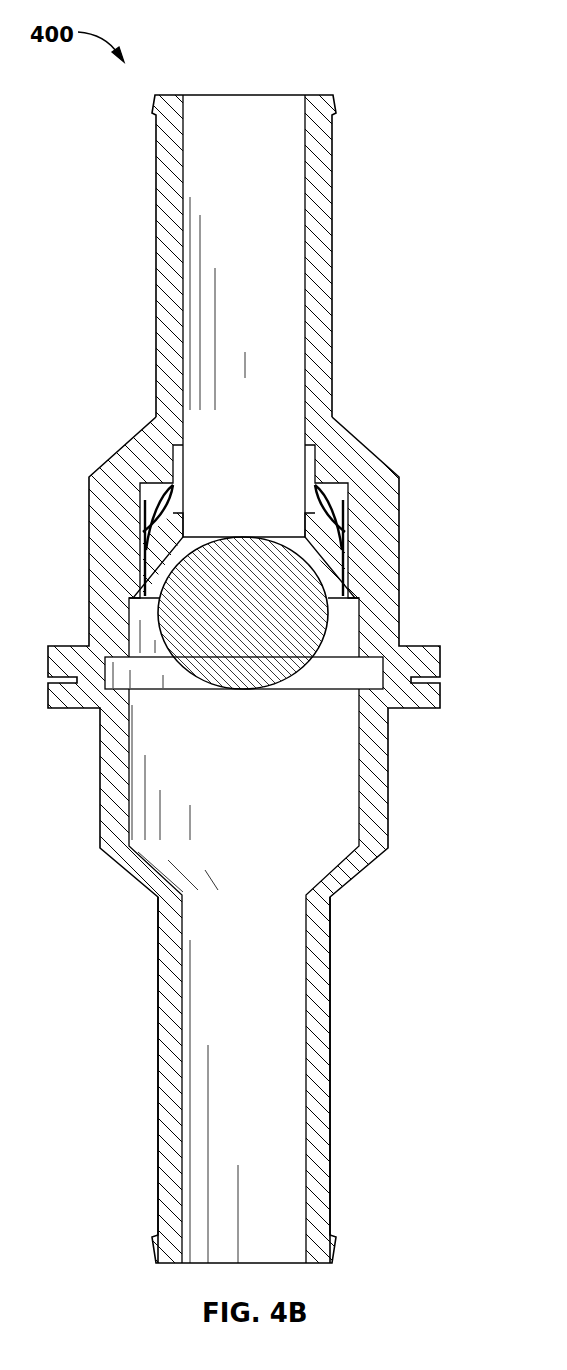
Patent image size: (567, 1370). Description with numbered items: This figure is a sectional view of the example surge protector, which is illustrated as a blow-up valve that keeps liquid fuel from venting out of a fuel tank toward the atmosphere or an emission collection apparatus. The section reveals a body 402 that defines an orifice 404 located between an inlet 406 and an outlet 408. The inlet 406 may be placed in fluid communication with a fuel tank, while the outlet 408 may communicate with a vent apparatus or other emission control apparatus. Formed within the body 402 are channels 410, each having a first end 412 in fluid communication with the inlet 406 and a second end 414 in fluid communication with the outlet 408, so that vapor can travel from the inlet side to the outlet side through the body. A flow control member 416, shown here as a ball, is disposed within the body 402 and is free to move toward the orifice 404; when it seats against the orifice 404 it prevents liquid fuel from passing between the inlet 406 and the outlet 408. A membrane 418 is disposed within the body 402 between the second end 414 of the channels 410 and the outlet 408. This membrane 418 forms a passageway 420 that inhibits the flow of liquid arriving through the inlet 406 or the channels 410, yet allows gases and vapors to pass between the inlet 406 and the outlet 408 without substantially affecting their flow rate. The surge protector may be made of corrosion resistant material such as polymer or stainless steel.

The body 402 is at (409, 650).
The orifice 404 is at (330, 520).
The inlet 406 is at (157, 1065).
The outlet 408 is at (322, 182).
The channels 410 is at (148, 547).
The first end 412 is at (150, 582).
The second end 414 is at (153, 508).
The flow control member 416 is at (315, 635).
The membrane 418 is at (288, 432).
The passageway 420 is at (235, 448).